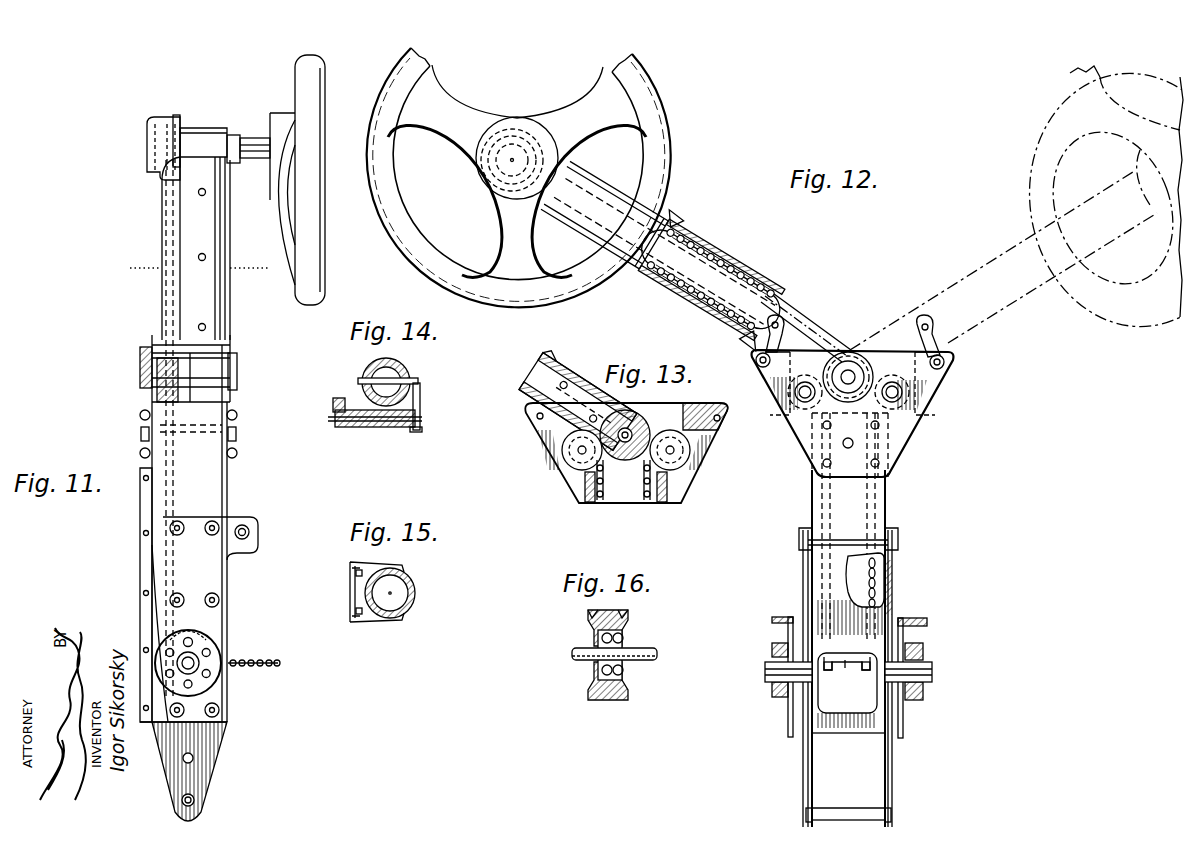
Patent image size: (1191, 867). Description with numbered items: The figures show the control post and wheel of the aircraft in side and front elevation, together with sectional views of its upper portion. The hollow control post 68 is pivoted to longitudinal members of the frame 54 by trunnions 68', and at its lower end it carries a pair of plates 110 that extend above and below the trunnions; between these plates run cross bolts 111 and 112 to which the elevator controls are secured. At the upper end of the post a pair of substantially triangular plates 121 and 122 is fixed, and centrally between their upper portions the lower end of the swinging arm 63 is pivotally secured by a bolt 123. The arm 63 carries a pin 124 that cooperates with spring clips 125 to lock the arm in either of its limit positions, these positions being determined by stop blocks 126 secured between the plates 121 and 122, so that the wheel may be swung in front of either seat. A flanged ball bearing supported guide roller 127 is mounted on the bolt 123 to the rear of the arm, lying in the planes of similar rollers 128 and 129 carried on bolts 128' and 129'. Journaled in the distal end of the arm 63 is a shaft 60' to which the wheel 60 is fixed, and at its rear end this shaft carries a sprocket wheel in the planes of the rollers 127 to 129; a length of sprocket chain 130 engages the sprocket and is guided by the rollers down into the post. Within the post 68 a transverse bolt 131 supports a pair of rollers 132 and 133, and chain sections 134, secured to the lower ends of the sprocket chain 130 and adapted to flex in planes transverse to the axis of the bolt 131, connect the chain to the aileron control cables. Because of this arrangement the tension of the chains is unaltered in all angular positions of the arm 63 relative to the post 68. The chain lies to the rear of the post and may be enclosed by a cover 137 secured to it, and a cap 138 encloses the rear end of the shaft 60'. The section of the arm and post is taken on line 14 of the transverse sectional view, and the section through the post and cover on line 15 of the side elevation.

In FIG. 13, the section line 14 is at (552, 358).
In FIG. 11, the section line 15 is at (199, 268).
In FIG. 12, the frame 54 is at (912, 623).
In FIG. 11, the wheel 60 is at (313, 180).
In FIG. 12, the wheel 60 is at (535, 177).
In FIG. 11, the shaft 60' is at (248, 129).
In FIG. 11, the swinging arm 63 is at (230, 245).
In FIG. 12, the swinging arm 63 is at (661, 242).
In FIG. 13, the swinging arm 63 is at (527, 396).
In FIG. 14, the swinging arm 63 is at (402, 372).
In FIG. 15, the swinging arm 63 is at (416, 593).
In FIG. 12, the control post 68 is at (870, 648).
In FIG. 12, the trunnions 68' is at (827, 690).
In FIG. 11, the plates 110 is at (214, 747).
In FIG. 12, the plates 110 is at (808, 577).
In FIG. 11, the cross bolt 111 is at (252, 524).
In FIG. 12, the cross bolt 111 is at (860, 540).
In FIG. 12, the cross bolt 112 is at (838, 811).
In FIG. 11, the triangular plate 121 is at (232, 400).
In FIG. 12, the triangular plate 121 is at (927, 381).
In FIG. 14, the triangular plate 121 is at (418, 429).
In FIG. 11, the triangular plate 122 is at (150, 394).
In FIG. 13, the triangular plate 122 is at (700, 450).
In FIG. 14, the triangular plate 122 is at (336, 413).
In FIG. 12, the bolt 123 is at (849, 372).
In FIG. 12, the pin 124 is at (779, 318).
In FIG. 14, the pin 124 is at (420, 381).
In FIG. 12, the spring clips 125 is at (946, 344).
In FIG. 14, the spring clips 125 is at (421, 401).
In FIG. 13, the stop blocks 126 is at (570, 440).
In FIG. 14, the stop blocks 126 is at (390, 430).
In FIG. 11, the guide roller 127 is at (150, 348).
In FIG. 11, the roller 128 is at (157, 374).
In FIG. 13, the roller 128 is at (564, 482).
In FIG. 16, the roller 128 is at (583, 667).
In FIG. 12, the bolt 128' is at (796, 426).
In FIG. 13, the bolt 128' is at (590, 495).
In FIG. 16, the bolt 128' is at (583, 662).
In FIG. 13, the roller 129 is at (687, 478).
In FIG. 12, the bolt 129' is at (921, 411).
In FIG. 13, the bolt 129' is at (671, 419).
In FIG. 11, the sprocket chain 130 is at (172, 280).
In FIG. 12, the sprocket chain 130 is at (712, 263).
In FIG. 13, the sprocket chain 130 is at (646, 492).
In FIG. 15, the sprocket chain 130 is at (350, 618).
In FIG. 11, the transverse bolt 131 is at (190, 643).
In FIG. 12, the transverse bolt 131 is at (848, 670).
In FIG. 12, the roller 132 is at (832, 667).
In FIG. 12, the roller 133 is at (868, 663).
In FIG. 11, the chain sections 134 is at (279, 667).
In FIG. 12, the chain sections 134 is at (882, 597).
In FIG. 11, the cover 137 is at (162, 218).
In FIG. 15, the cover 137 is at (348, 584).
In FIG. 11, the cap 138 is at (147, 150).